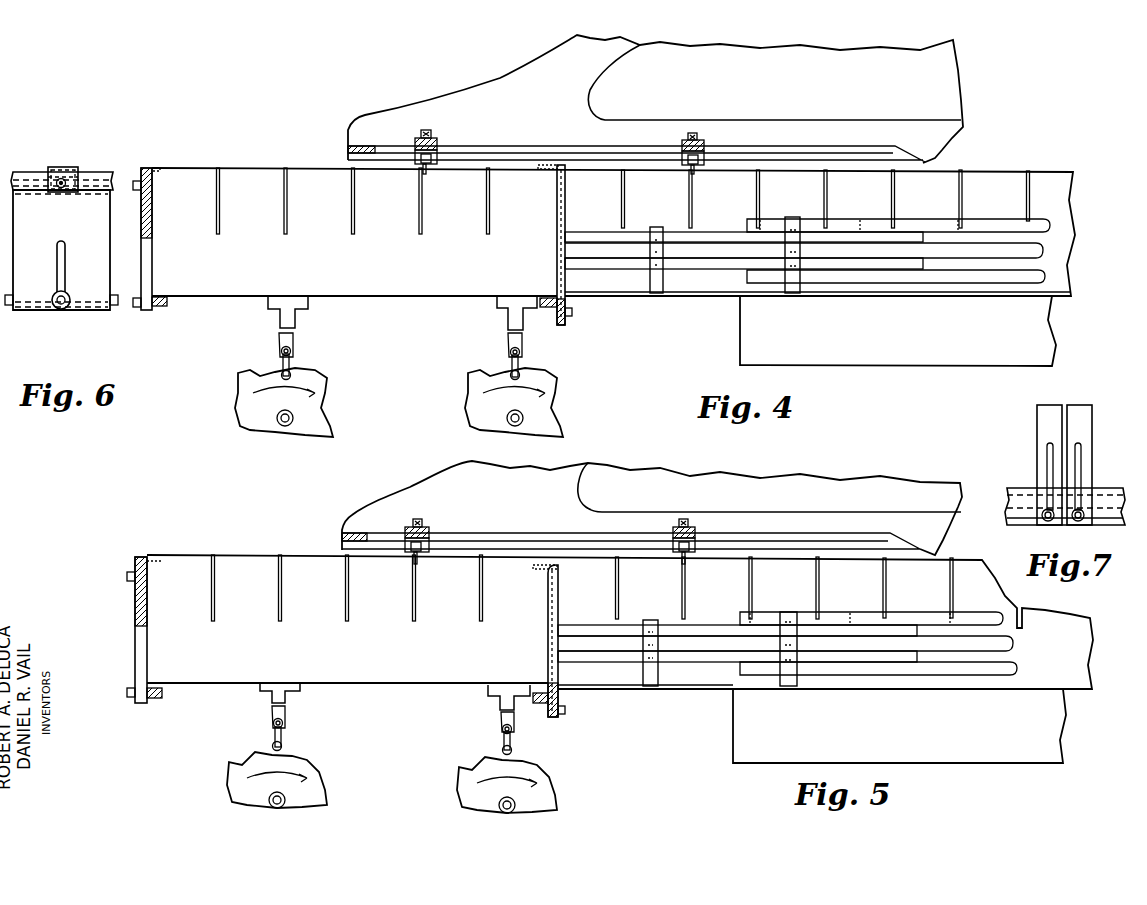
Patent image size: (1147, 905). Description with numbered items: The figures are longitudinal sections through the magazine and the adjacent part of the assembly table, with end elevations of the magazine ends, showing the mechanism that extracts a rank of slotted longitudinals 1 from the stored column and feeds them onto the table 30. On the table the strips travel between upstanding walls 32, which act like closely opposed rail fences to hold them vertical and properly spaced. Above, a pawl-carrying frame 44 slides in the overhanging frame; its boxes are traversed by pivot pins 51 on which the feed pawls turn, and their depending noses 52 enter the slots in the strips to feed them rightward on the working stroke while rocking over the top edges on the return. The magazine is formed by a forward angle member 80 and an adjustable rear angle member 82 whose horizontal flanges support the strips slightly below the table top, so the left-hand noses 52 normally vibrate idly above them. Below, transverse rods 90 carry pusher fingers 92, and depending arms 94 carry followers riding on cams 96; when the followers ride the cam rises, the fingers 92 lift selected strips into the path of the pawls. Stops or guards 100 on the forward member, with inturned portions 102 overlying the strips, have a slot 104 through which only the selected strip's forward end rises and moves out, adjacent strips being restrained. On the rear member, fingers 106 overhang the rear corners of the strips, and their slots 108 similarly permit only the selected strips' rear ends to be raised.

In FIG. 4, the longitudinal 1 is at (425, 300).
In FIG. 5, the longitudinal 1 is at (425, 684).
In FIG. 4, the table 30 is at (740, 332).
In FIG. 5, the table 30 is at (733, 745).
In FIG. 4, the upstanding walls 32 is at (748, 223).
In FIG. 5, the upstanding walls 32 is at (742, 621).
In FIG. 4, the pawl-carrying frame 44 is at (805, 151).
In FIG. 5, the pawl-carrying frame 44 is at (557, 538).
In FIG. 4, the pivot pin 51 is at (413, 154).
In FIG. 5, the pivot pin 51 is at (404, 545).
In FIG. 4, the depending nose of pawl 52 is at (422, 170).
In FIG. 5, the depending nose of pawl 52 is at (413, 557).
In FIG. 4, the forward angle member 80 is at (552, 308).
In FIG. 5, the forward angle member 80 is at (558, 700).
In FIG. 4, the rear angle member 82 is at (160, 306).
In FIG. 5, the rear angle member 82 is at (160, 698).
In FIG. 4, the transverse rod 90 is at (291, 351).
In FIG. 5, the transverse rod 90 is at (284, 722).
In FIG. 4, the pusher finger 92 is at (296, 311).
In FIG. 5, the pusher finger 92 is at (300, 693).
In FIG. 4, the depending arm 94 is at (282, 359).
In FIG. 5, the depending arm 94 is at (274, 738).
In FIG. 4, the cam 96 is at (326, 402).
In FIG. 5, the cam 96 is at (320, 777).
In FIG. 7, the stop or guard 100 is at (1038, 445).
In FIG. 4, the stop or guard 100 is at (566, 224).
In FIG. 5, the stop or guard 100 is at (548, 607).
In FIG. 4, the inturned portion 102 is at (548, 165).
In FIG. 5, the inturned portion 102 is at (538, 567).
In FIG. 7, the slot 104 is at (1062, 425).
In FIG. 6, the finger 106 is at (80, 170).
In FIG. 4, the finger 106 is at (153, 169).
In FIG. 5, the finger 106 is at (141, 556).
In FIG. 6, the slot 108 is at (66, 168).